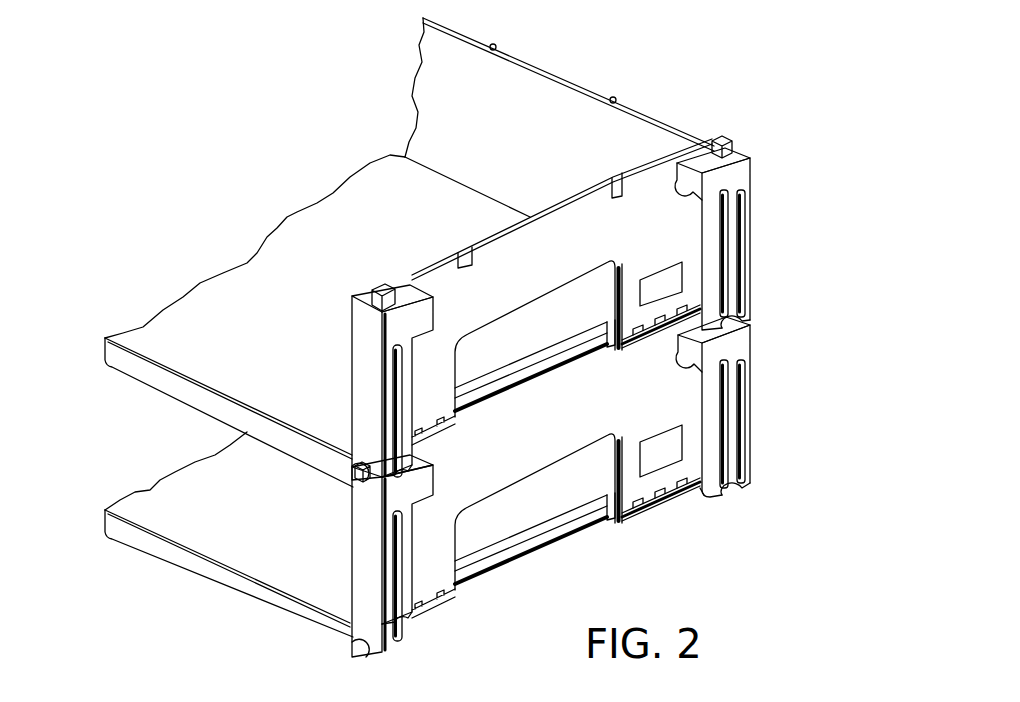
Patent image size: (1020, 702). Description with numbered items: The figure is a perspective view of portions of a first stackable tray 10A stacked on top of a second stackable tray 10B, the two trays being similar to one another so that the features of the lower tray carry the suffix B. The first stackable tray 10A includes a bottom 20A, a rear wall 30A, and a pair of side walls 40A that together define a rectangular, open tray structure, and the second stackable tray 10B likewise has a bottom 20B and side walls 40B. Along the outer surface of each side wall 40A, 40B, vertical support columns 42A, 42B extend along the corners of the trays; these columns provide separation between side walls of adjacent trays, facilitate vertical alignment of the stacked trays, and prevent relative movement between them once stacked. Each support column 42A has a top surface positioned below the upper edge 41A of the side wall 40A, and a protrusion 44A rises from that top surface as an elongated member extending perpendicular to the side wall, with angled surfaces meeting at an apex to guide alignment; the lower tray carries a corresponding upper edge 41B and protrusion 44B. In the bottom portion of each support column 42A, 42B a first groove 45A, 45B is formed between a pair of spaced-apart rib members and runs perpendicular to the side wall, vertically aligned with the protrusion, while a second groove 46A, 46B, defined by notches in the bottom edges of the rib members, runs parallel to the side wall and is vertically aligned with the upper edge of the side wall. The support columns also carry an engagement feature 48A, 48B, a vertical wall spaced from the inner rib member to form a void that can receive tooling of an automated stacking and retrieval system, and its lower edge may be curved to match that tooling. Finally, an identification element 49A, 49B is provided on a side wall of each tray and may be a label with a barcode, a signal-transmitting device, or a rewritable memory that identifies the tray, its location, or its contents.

The first stackable tray 10A is at (703, 50).
The second stackable tray 10B is at (818, 345).
The bottom 20A is at (180, 330).
The bottom 20B is at (178, 492).
The rear wall 30A is at (445, 100).
The side wall 40A is at (512, 275).
The side wall 40B is at (527, 440).
The upper edge 41A is at (650, 163).
The upper edge 41B is at (606, 345).
The support column 42A is at (752, 228).
The support column 42B is at (752, 395).
The protrusion 44A is at (732, 147).
The protrusion 44B is at (357, 484).
The first groove 45A is at (735, 326).
The first groove 45B is at (737, 492).
The second groove 46A is at (350, 478).
The second groove 46B is at (352, 648).
The engagement feature 48A is at (688, 196).
The engagement feature 48B is at (688, 370).
The identification element 49A is at (668, 279).
The identification element 49B is at (665, 452).